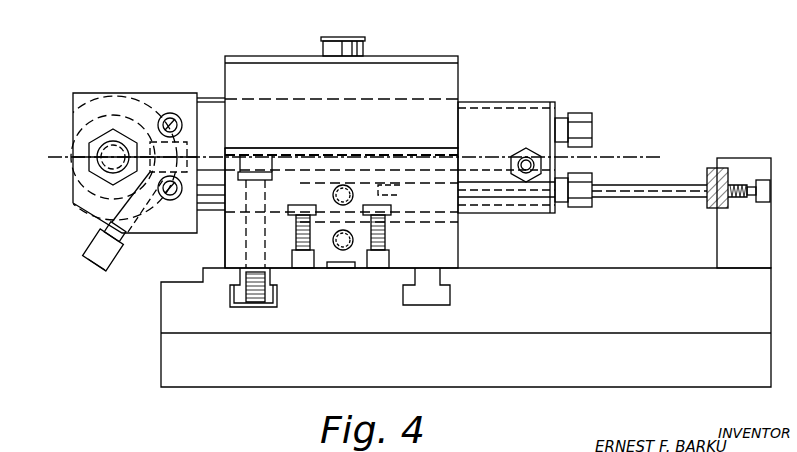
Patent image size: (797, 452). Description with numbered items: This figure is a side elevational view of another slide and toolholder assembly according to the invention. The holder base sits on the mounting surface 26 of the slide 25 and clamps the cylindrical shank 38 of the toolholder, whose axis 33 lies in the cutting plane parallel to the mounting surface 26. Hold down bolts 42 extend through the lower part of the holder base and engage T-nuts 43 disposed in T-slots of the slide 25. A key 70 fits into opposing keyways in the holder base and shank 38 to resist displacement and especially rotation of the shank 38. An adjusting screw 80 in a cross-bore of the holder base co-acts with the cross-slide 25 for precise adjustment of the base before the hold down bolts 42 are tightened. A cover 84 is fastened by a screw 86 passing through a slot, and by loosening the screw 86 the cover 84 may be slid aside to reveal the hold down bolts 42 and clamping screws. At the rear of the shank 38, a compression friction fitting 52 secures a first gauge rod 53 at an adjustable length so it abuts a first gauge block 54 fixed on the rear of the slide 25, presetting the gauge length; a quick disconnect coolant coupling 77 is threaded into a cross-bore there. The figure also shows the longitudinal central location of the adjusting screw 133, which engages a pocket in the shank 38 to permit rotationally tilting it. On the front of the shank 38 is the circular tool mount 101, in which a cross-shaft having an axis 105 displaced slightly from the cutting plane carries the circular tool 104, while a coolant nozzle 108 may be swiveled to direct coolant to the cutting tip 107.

The slide 25 is at (161, 351).
The mounting surface 26 is at (570, 268).
The axis 33 is at (613, 155).
The cylindrical shank 38 is at (487, 105).
The hold down bolts 42 is at (238, 242).
The T-nuts 43 is at (230, 292).
The compression friction fitting 52 is at (583, 208).
The first gauge rod 53 is at (642, 198).
The first gauge block 54 is at (712, 168).
The key 70 is at (400, 218).
The quick disconnect coolant coupling 77 is at (521, 150).
The adjusting screw 80 is at (340, 250).
The cover 84 is at (425, 57).
The screw 86 is at (365, 44).
The circular tool mount 101 is at (150, 236).
The circular tool 104 is at (74, 140).
The axis of the cross-shaft 105 is at (113, 157).
The cutting tip 107 is at (55, 157).
The coolant nozzle 108 is at (88, 250).
The adjusting screw 133 is at (333, 190).